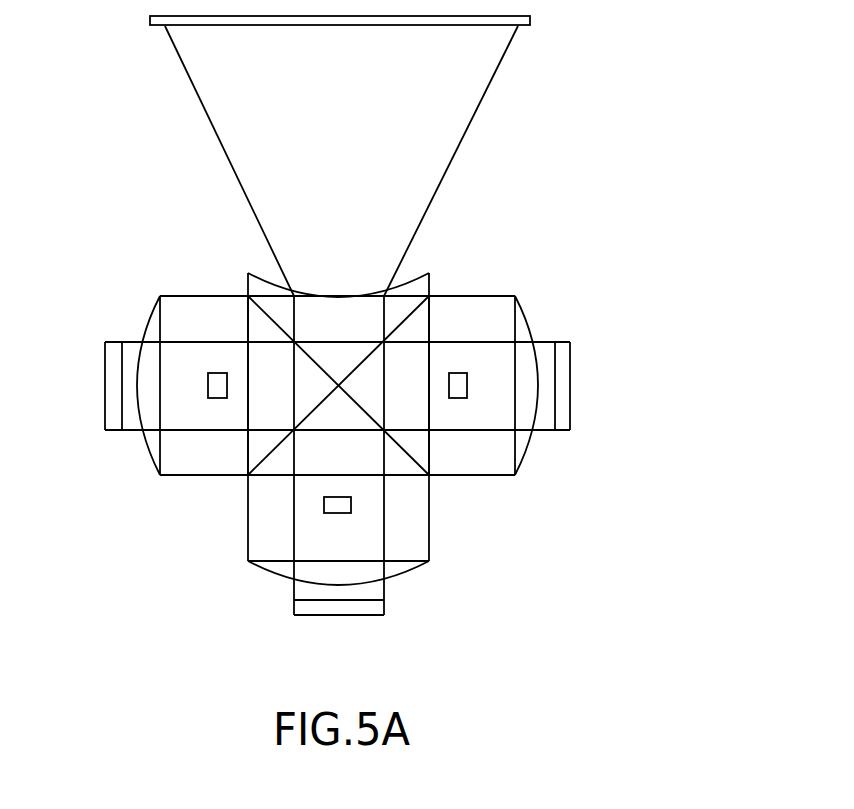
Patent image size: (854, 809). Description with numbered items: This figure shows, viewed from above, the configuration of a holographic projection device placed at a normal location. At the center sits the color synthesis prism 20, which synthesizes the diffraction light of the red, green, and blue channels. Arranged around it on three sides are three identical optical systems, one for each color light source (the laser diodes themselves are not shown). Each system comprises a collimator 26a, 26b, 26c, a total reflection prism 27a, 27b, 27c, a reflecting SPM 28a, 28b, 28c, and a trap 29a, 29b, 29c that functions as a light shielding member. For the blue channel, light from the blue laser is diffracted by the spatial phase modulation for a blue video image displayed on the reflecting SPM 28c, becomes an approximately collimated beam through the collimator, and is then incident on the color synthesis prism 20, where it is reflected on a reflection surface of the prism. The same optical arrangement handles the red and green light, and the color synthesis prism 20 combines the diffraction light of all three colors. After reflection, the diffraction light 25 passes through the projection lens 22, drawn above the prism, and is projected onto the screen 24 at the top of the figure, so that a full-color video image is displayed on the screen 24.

The color synthesis prism 20 is at (402, 467).
The projection lens 22 is at (262, 285).
The screen 24 is at (442, 28).
The diffraction light 25 is at (452, 160).
The collimator 26a is at (520, 320).
The collimator 26b is at (277, 568).
The collimator 26c is at (157, 320).
The total reflection prism 27a is at (503, 468).
The total reflection prism 27b is at (252, 492).
The total reflection prism 27c is at (193, 303).
The reflecting SPM 28a is at (570, 383).
The reflecting SPM 28b is at (338, 618).
The reflecting SPM 28c is at (105, 383).
The trap 29a is at (462, 373).
The trap 29b is at (324, 502).
The trap 29c is at (207, 390).